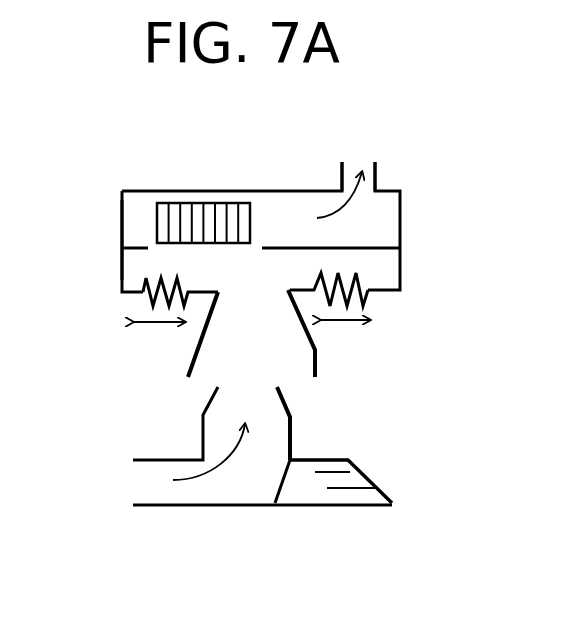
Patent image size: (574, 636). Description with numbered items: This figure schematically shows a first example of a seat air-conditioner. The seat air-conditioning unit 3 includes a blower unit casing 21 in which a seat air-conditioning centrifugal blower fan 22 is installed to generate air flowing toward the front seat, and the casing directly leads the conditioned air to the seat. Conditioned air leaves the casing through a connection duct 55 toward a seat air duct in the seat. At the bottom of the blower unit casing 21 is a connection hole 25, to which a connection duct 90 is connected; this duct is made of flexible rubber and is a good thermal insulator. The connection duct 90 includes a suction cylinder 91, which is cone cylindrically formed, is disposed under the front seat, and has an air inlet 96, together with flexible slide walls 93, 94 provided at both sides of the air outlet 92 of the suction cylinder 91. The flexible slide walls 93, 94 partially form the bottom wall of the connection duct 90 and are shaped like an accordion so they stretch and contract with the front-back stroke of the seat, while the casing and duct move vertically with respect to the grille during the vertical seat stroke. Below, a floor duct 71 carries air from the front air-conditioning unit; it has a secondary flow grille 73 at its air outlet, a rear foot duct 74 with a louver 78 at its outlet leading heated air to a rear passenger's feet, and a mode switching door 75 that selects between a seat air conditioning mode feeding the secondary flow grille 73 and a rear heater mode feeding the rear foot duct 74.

The seat air-conditioning unit 3 is at (118, 176).
The blower unit casing 21 is at (122, 225).
The seat air-conditioning centrifugal blower fan 22 is at (195, 218).
The connection hole 25 is at (167, 252).
The connection duct 55 is at (378, 170).
The connection duct 90 is at (400, 270).
The flexible slide wall 93 is at (142, 305).
The flexible slide wall 94 is at (367, 293).
The air outlet 92 is at (247, 290).
The suction cylinder 91 is at (315, 358).
The air inlet 96 is at (288, 367).
The secondary flow grille 73 is at (203, 431).
The floor duct 71 is at (163, 507).
The mode switching door 75 is at (279, 497).
The rear foot duct 74 is at (367, 505).
The louver 78 is at (343, 468).